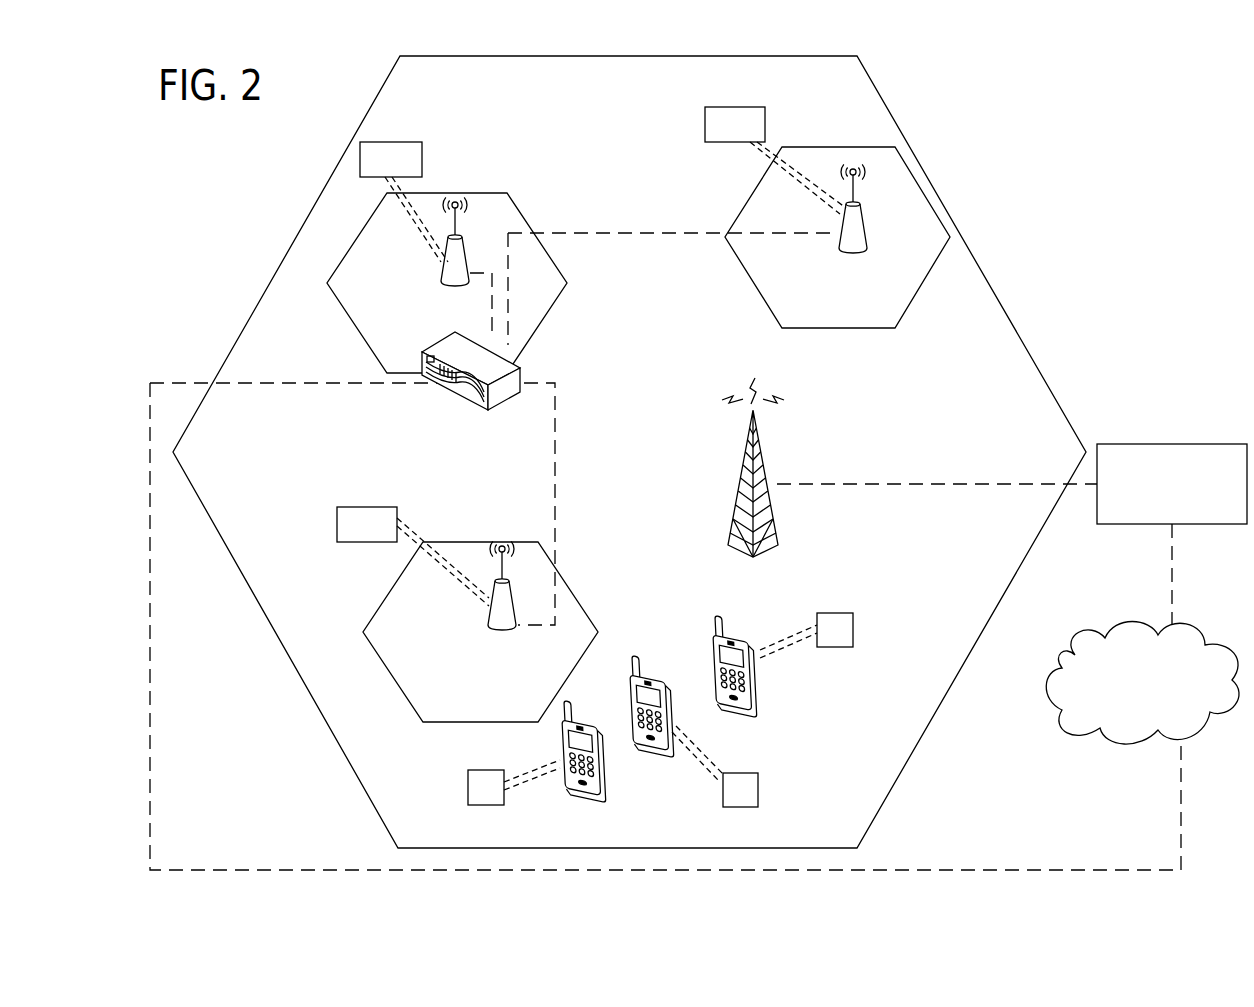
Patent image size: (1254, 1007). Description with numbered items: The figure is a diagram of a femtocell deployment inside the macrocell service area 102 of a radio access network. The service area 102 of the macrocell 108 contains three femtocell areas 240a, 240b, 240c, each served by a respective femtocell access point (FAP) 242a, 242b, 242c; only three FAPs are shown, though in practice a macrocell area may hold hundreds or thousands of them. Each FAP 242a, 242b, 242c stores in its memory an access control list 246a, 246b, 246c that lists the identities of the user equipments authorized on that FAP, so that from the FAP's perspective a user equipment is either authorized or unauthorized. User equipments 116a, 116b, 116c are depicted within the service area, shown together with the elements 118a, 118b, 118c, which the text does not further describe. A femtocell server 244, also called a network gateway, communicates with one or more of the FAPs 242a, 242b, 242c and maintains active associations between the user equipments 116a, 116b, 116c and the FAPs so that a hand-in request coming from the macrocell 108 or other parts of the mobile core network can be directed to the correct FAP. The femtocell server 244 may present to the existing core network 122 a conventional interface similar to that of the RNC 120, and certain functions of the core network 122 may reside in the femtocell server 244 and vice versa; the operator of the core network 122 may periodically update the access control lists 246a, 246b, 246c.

The macrocell service area 102 is at (292, 280).
The macrocell 108 is at (728, 545).
The user equipment 116a is at (580, 794).
The user equipment 116b is at (645, 748).
The user equipment 116c is at (730, 710).
The fault list (FL) of mobile device 118a is at (468, 789).
The fault list (FL) of mobile device 118b is at (758, 786).
The fault list (FL) of mobile device 118c is at (853, 628).
The RNC 120 is at (1172, 484).
The core network 122 is at (1125, 602).
The femtocell area 240a is at (576, 588).
The femtocell area 240b is at (949, 224).
The femtocell area 240c is at (504, 182).
The femtocell access point 242a is at (485, 628).
The femtocell access point 242b is at (838, 253).
The femtocell access point 242c is at (447, 284).
The femtocell server 244 is at (447, 392).
The access control list 246a is at (360, 507).
The access control list 246b is at (725, 107).
The access control list 246c is at (388, 142).